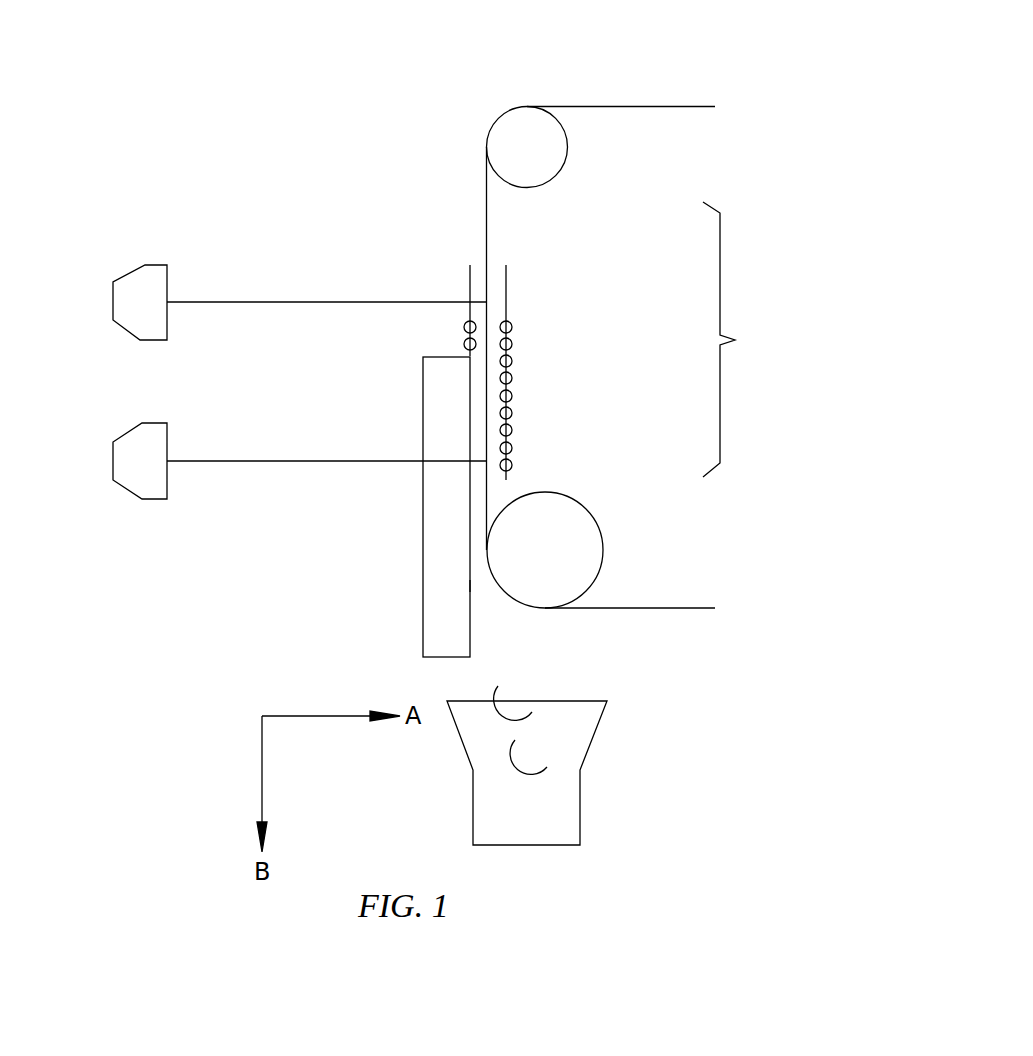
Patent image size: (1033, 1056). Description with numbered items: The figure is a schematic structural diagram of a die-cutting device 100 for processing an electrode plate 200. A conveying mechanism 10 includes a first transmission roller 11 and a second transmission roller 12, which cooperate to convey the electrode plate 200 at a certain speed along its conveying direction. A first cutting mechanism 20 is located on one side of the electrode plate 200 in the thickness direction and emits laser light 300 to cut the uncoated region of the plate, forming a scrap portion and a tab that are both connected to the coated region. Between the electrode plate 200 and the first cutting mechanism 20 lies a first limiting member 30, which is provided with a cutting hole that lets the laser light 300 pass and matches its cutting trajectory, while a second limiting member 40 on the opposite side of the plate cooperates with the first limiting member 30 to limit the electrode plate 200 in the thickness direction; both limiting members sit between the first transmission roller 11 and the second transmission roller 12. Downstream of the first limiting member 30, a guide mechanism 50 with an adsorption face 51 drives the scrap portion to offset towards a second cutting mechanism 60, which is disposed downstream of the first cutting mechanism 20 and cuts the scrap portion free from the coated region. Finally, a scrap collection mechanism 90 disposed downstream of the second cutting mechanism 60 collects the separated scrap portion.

The die-cutting device 100 is at (304, 234).
The electrode plate 200 is at (622, 106).
The conveying mechanism 10 is at (737, 339).
The first transmission roller 11 is at (543, 162).
The second transmission roller 12 is at (585, 528).
The first cutting mechanism 20 is at (137, 292).
The second cutting mechanism 60 is at (140, 473).
The laser light 300 is at (288, 303).
The first limiting member 30 is at (470, 292).
The second limiting member 40 is at (507, 293).
The guide mechanism 50 is at (435, 423).
The adsorption face 51 is at (470, 585).
The scrap collection mechanism 90 is at (595, 738).